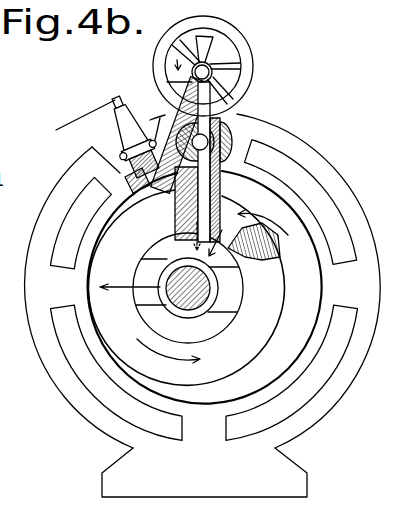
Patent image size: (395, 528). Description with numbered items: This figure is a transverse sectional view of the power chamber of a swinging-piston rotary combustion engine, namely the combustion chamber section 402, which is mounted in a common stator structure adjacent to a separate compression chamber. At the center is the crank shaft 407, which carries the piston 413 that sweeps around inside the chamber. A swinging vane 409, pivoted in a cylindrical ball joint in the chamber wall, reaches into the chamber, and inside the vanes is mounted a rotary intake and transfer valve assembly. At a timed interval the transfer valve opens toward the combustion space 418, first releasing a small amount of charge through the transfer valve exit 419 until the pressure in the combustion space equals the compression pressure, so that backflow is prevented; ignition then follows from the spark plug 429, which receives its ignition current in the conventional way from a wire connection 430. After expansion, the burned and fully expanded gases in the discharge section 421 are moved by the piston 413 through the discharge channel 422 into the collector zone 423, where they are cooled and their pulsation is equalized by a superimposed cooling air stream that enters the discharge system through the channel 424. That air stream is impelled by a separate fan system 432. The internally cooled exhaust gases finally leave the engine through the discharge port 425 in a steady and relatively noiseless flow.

The combustion chamber section 402 is at (296, 138).
The piston 413 is at (283, 306).
The discharge section 421 is at (280, 333).
The discharge port 425 is at (168, 261).
The crank shaft 407 is at (187, 296).
The discharge channel 422 is at (240, 212).
The collector zone 423 is at (236, 260).
The transfer valve exit 419 is at (176, 181).
The swinging vane 409 is at (177, 226).
The channel 424 is at (211, 181).
The fan system 432 is at (232, 76).
The spark plug 429 is at (119, 117).
The combustion space 418 is at (140, 197).
The wire connection 430 is at (83, 116).